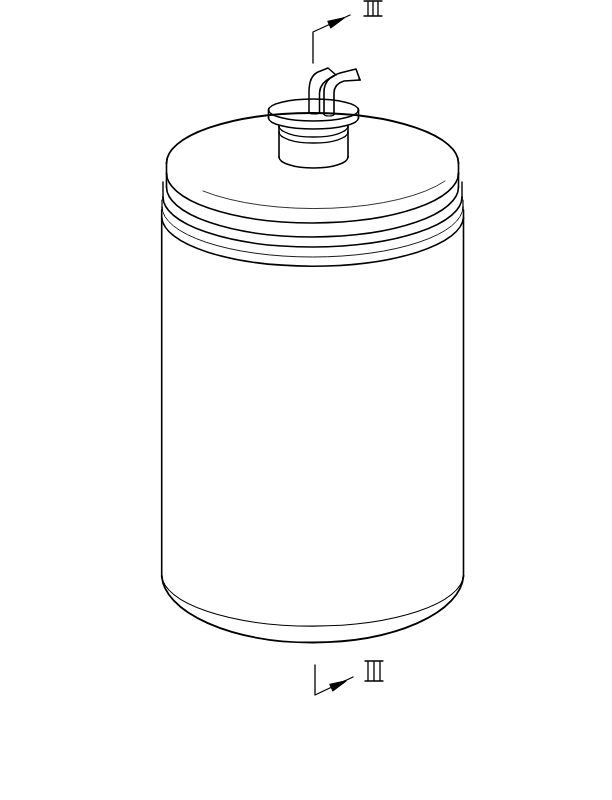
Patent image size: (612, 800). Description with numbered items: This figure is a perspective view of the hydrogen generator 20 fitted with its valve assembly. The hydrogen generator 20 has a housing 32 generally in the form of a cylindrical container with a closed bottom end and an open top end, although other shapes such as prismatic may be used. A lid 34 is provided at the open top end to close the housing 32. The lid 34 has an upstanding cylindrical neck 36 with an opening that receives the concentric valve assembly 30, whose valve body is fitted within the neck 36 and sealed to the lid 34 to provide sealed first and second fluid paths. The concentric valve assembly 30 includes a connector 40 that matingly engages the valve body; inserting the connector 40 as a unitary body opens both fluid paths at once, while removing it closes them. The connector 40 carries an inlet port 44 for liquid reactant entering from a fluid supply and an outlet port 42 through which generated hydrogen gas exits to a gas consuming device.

The hydrogen generator 20 is at (115, 268).
The concentric valve assembly 30 is at (258, 130).
The housing 32 is at (185, 402).
The lid 34 is at (198, 157).
The neck 36 is at (340, 150).
The connector 40 is at (293, 110).
The outlet port 42 is at (334, 69).
The inlet port 44 is at (362, 76).